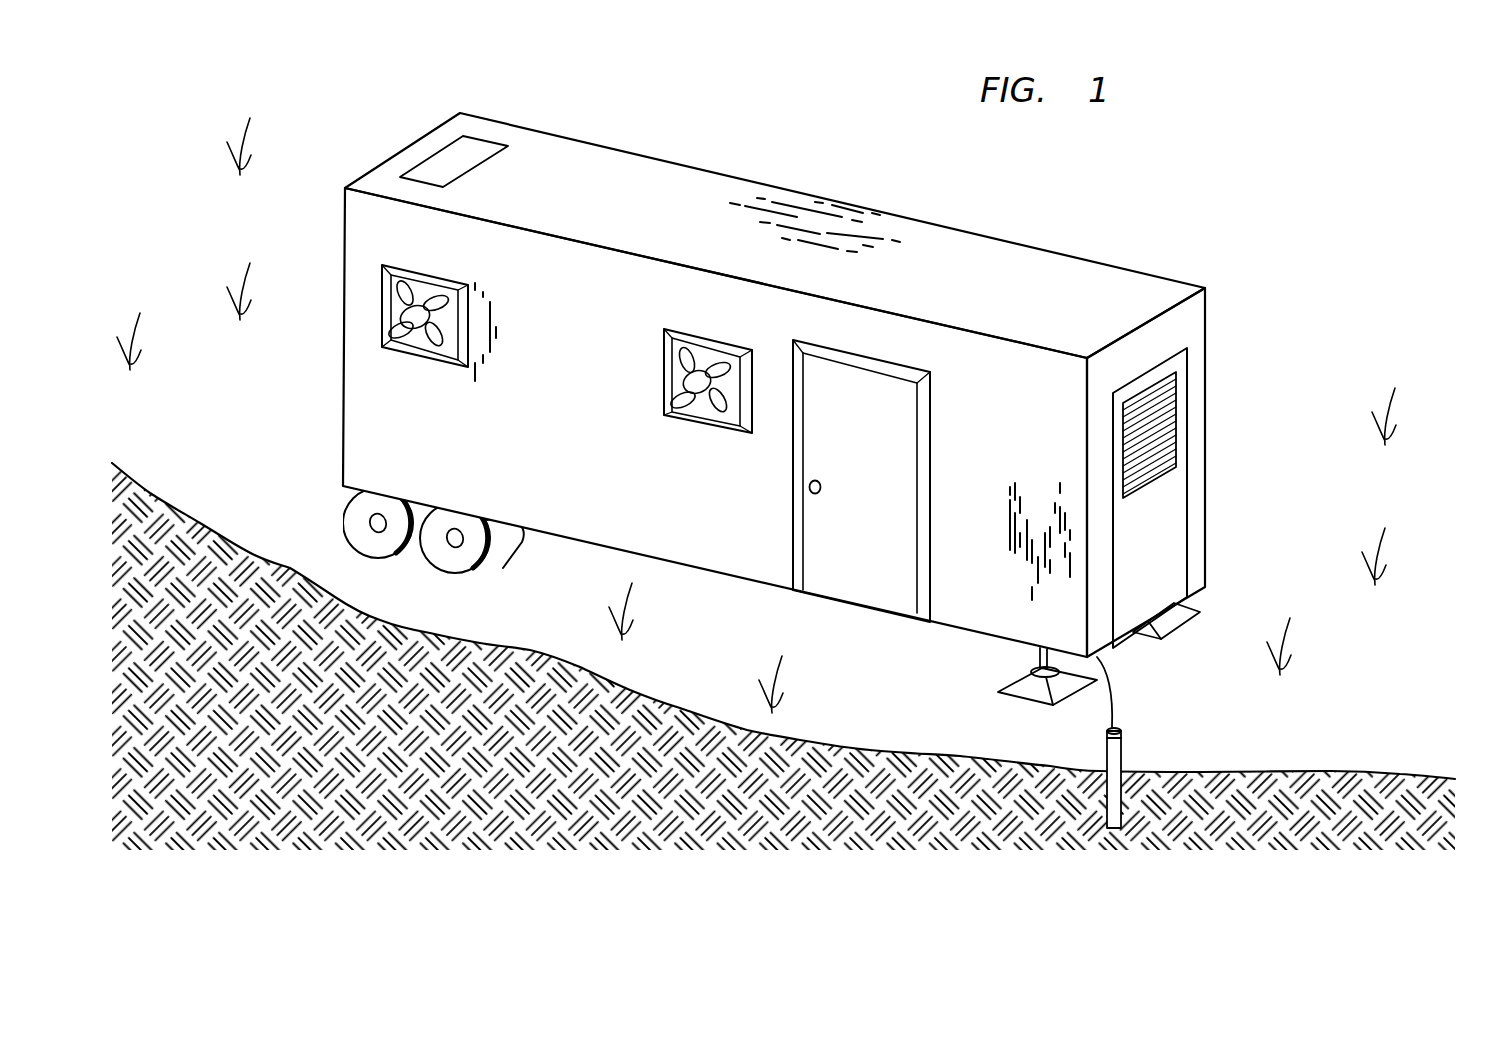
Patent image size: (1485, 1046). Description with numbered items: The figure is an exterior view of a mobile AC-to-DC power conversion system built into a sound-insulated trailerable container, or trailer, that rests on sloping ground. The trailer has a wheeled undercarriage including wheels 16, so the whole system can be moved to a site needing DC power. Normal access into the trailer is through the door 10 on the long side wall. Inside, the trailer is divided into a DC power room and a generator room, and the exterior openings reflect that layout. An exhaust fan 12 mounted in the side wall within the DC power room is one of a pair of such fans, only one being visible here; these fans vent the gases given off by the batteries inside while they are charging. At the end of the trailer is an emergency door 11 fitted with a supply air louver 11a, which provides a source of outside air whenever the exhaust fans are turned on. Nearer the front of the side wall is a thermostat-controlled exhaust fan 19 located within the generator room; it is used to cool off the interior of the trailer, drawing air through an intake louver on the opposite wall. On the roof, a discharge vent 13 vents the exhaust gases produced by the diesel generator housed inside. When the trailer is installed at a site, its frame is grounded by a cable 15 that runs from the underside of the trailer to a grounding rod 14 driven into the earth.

The door 10 is at (898, 463).
The emergency door 11 is at (1188, 517).
The supply air louver 11a is at (1164, 398).
The exhaust fan 12 is at (680, 397).
The discharge vent 13 is at (475, 148).
The grounding rod 14 is at (1121, 760).
The cable 15 is at (1117, 698).
The wheels 16 is at (448, 567).
The thermostat-controlled exhaust fan 19 is at (437, 343).